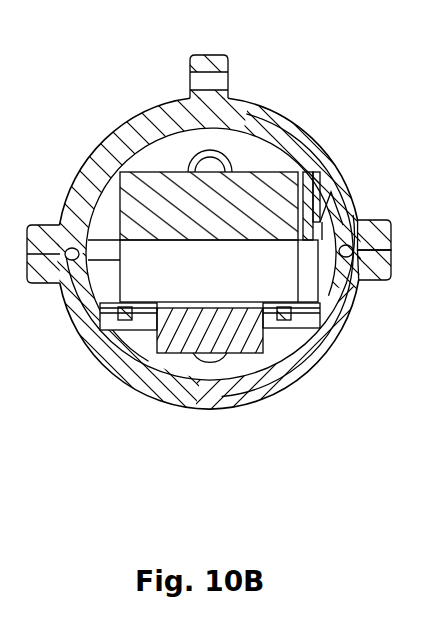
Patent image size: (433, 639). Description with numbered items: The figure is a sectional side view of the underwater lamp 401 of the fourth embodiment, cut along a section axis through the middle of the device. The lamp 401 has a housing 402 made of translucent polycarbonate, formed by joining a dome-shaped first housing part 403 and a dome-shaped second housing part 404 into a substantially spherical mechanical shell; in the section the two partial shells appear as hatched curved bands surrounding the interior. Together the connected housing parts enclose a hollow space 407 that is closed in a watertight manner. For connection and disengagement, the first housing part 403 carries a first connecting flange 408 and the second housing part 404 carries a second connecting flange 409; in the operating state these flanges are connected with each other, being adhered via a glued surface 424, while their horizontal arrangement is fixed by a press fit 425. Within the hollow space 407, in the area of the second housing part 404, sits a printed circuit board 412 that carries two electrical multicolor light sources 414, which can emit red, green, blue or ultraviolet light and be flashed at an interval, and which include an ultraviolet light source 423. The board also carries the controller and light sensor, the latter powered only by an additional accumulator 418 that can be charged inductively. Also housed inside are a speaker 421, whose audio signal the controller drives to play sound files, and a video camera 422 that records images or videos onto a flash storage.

The lamp 401 is at (280, 83).
The housing 402 is at (155, 132).
The first housing part 403 is at (303, 143).
The second housing part 404 is at (337, 327).
The hollow space 407 is at (123, 338).
The first connecting flange 408 is at (368, 232).
The second connecting flange 409 is at (370, 272).
The printed circuit board 412 is at (198, 302).
The electrical multicolor light sources 414 is at (260, 400).
The additional accumulator 418 is at (247, 193).
The speaker 421 is at (158, 335).
The video camera 422 is at (125, 318).
The ultraviolet light source 423 is at (280, 313).
The glued surface 424 is at (37, 226).
The press fit 425 is at (312, 298).